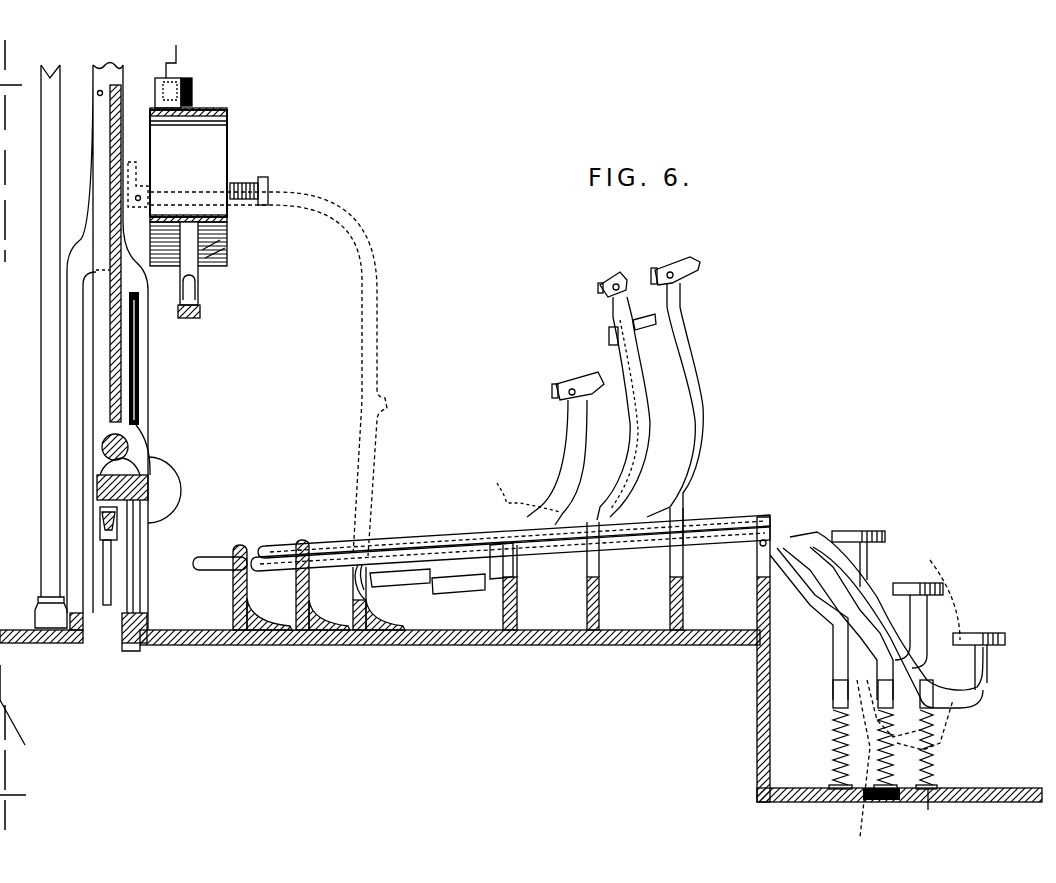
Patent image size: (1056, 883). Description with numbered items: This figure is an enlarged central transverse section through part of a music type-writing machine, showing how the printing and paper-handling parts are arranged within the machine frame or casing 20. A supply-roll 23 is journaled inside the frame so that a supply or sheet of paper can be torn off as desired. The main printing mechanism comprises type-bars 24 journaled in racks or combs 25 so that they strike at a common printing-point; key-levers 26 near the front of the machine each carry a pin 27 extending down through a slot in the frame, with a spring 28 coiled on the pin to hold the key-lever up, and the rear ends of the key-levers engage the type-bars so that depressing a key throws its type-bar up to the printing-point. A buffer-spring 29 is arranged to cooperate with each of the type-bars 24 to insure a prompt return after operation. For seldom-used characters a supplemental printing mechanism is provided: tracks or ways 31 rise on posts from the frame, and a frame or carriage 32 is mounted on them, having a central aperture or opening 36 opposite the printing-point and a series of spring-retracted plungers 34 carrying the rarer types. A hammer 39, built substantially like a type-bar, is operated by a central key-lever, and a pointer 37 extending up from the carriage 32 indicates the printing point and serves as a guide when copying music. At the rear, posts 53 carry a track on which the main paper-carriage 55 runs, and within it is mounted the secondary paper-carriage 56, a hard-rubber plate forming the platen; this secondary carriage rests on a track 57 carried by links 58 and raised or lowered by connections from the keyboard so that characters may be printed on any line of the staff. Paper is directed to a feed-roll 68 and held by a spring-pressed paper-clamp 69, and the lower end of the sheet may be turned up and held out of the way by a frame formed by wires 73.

The machine frame or casing 20 is at (430, 646).
The supply-roll 23 is at (481, 538).
The type-bar 24 is at (568, 452).
The rack or comb 25 is at (241, 545).
The key-lever 26 is at (853, 530).
The pin 27 is at (928, 806).
The spring 28 is at (833, 731).
The buffer-spring 29 is at (265, 596).
The track or way 31 is at (193, 318).
The frame or carriage 32 is at (222, 254).
The plunger 34 is at (262, 184).
The central aperture or opening 36 is at (257, 332).
The pointer 37 is at (181, 60).
The hammer 39 is at (612, 283).
The post 53 is at (44, 353).
The main paper-carriage 55 is at (75, 302).
The secondary paper-carriage 56 is at (143, 388).
The track 57 is at (99, 518).
The link 58 is at (108, 576).
The feed-roll 68 is at (102, 447).
The paper-clamp 69 is at (135, 451).
The wires 73 is at (98, 95).